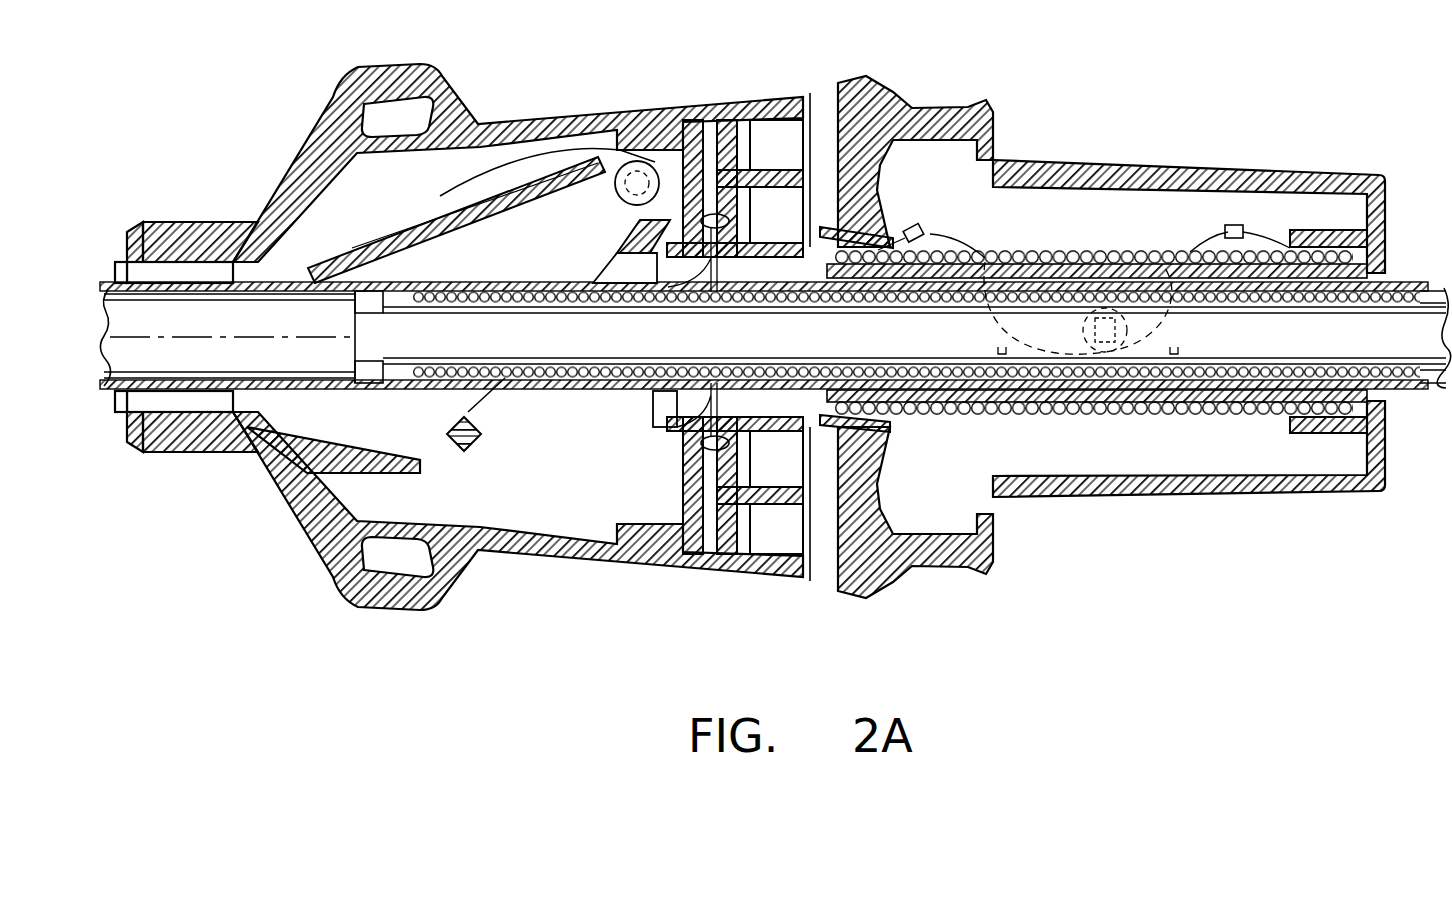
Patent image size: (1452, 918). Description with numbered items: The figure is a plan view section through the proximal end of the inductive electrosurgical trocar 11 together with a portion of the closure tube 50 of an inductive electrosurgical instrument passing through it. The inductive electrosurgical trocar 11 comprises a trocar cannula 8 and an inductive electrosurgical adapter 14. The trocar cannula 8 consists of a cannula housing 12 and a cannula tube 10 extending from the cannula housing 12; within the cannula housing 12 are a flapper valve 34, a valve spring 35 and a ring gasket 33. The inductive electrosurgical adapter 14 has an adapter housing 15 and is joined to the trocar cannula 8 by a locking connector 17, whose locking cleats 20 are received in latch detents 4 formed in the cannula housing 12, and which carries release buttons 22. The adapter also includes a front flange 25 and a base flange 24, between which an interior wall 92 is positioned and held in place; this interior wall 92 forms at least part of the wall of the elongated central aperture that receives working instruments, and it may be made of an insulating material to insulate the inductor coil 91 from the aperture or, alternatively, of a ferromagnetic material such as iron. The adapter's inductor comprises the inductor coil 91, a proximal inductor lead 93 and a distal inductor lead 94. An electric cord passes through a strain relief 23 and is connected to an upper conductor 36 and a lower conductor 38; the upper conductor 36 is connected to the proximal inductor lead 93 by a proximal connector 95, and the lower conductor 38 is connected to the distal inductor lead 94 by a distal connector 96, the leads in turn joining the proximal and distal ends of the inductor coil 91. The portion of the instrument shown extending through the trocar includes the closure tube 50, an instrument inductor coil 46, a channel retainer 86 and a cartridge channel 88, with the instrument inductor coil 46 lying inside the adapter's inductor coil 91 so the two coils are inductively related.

The latch detent 4 is at (742, 132).
The trocar cannula 8 is at (270, 191).
The cannula tube 10 is at (242, 398).
The inductive electrosurgical trocar 11 is at (598, 84).
The cannula housing 12 is at (380, 67).
The inductive electrosurgical adapter 14 is at (1127, 520).
The adapter housing 15 is at (1262, 483).
The locking connector 17 is at (822, 118).
The locking cleat 20 is at (793, 188).
The release button 22 is at (898, 96).
The strain relief 23 is at (1148, 336).
The base flange 24 is at (1388, 222).
The front flange 25 is at (852, 242).
The ring gasket 33 is at (726, 267).
The flapper valve 34 is at (314, 262).
The valve spring 35 is at (482, 194).
The upper conductor 36 is at (1212, 240).
The lower conductor 38 is at (966, 246).
The instrument inductor coil 46 is at (575, 298).
The closure tube 50 is at (503, 283).
The channel retainer 86 is at (515, 345).
The cartridge channel 88 is at (166, 339).
The inductor coil 91 is at (1030, 250).
The interior wall 92 is at (1138, 265).
The proximal inductor lead 93 is at (1287, 234).
The distal inductor lead 94 is at (905, 236).
The proximal connector 95 is at (1233, 230).
The distal connector 96 is at (930, 235).